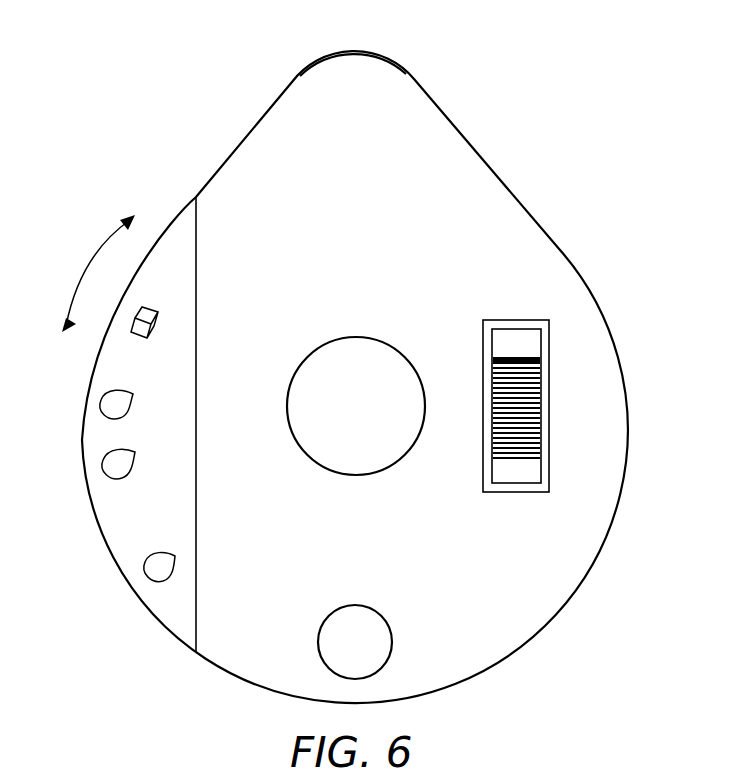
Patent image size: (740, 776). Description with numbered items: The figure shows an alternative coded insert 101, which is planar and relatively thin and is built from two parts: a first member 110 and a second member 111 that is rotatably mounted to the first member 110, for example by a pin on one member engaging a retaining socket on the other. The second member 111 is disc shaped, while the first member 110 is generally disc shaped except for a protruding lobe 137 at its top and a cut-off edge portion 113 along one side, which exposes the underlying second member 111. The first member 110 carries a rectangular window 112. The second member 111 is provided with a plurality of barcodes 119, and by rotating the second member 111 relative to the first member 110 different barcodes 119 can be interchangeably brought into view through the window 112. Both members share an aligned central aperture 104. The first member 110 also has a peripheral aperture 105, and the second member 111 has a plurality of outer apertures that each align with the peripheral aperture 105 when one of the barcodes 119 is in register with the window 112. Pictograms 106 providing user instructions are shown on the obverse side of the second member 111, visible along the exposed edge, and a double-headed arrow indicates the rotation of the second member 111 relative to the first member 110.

The coded insert 101 is at (594, 193).
The first member 110 is at (453, 167).
The protruding lobe 137 is at (353, 65).
The cut-off edge portion 113 is at (197, 265).
The second member 111 is at (174, 603).
The pictograms 106 is at (102, 463).
The central aperture 104 is at (356, 406).
The peripheral aperture 105 is at (355, 642).
The rectangular window 112 is at (483, 334).
The barcodes 119 is at (512, 457).